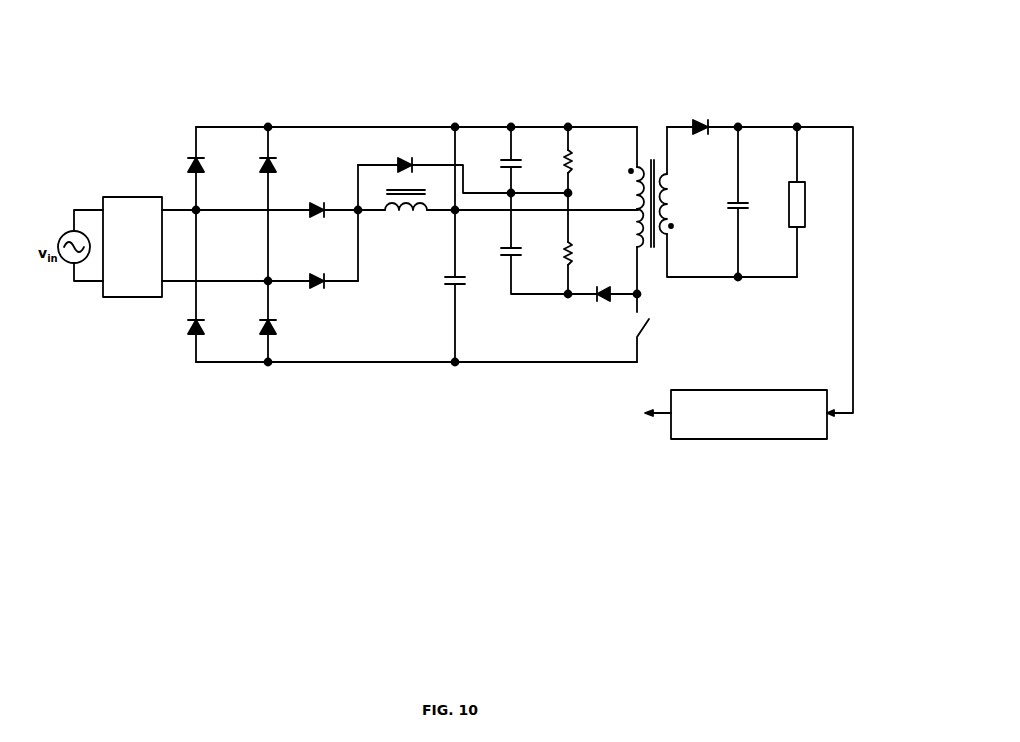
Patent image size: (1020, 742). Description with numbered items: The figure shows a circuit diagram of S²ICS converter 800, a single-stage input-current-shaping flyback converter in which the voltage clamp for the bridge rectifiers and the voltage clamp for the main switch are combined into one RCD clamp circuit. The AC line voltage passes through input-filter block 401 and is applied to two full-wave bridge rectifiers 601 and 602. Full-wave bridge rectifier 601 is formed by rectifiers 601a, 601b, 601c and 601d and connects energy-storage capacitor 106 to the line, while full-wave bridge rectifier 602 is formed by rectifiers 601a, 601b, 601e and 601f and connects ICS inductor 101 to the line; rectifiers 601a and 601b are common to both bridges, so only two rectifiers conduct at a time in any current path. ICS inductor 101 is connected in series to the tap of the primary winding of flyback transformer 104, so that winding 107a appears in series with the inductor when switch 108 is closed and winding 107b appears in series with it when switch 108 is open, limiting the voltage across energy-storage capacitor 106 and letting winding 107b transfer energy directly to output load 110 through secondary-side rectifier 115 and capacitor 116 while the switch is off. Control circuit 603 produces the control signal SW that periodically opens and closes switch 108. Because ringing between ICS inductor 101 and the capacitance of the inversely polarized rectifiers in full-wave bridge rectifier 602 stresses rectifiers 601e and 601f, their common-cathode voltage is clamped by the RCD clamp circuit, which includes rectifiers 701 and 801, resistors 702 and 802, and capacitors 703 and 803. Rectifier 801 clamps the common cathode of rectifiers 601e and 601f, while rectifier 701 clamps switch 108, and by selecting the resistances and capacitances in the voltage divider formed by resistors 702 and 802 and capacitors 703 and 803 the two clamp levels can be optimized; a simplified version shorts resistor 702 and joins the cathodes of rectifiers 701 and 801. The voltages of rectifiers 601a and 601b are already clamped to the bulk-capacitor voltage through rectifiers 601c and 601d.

The S²ICS converter 800 is at (443, 62).
The full-wave bridge rectifier 601 is at (233, 114).
The rectifier 601a is at (190, 330).
The rectifier 601b is at (264, 330).
The rectifier 601c is at (201, 163).
The rectifier 601d is at (273, 163).
The rectifier 601e is at (324, 204).
The rectifier 601f is at (324, 288).
The input-filter block 401 is at (132, 196).
The rectifier 801 is at (397, 162).
The ICS inductor 101 is at (420, 209).
The full-wave bridge rectifier 602 is at (361, 264).
The energy-storage (bulk) capacitor 106 is at (452, 286).
The capacitor 803 is at (508, 158).
The resistor 802 is at (565, 158).
The capacitor 703 is at (508, 246).
The resistor 702 is at (566, 244).
The rectifier 701 is at (609, 302).
The winding 107b is at (630, 168).
The winding 107a is at (632, 240).
The flyback transformer 104 is at (652, 248).
The switch 108 is at (652, 318).
The secondary-side rectifier 115 is at (709, 122).
The output filter capacitor CF 116 is at (736, 212).
The output load 110 is at (805, 187).
The control circuit 603 is at (750, 390).